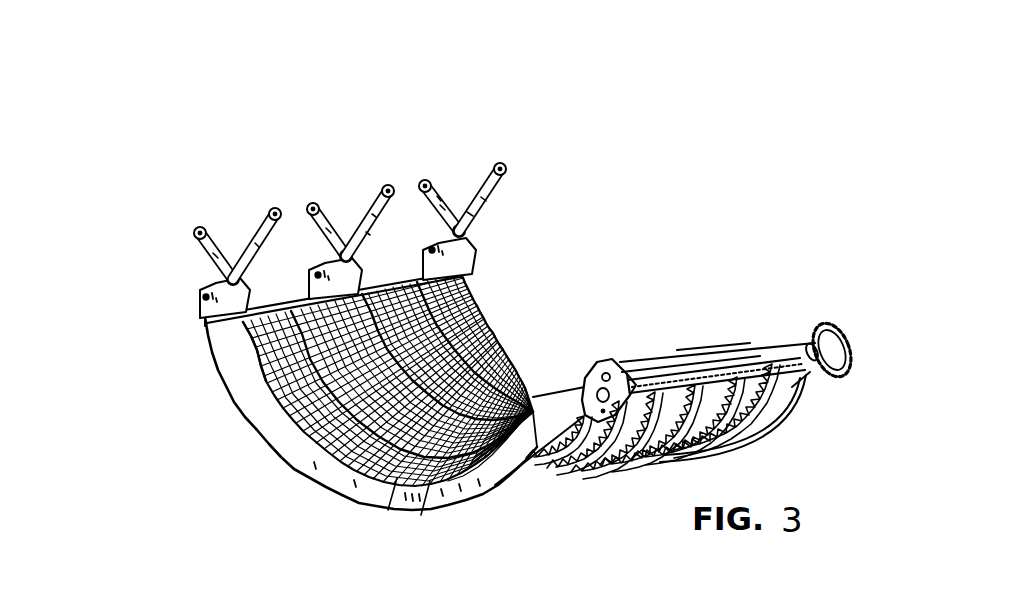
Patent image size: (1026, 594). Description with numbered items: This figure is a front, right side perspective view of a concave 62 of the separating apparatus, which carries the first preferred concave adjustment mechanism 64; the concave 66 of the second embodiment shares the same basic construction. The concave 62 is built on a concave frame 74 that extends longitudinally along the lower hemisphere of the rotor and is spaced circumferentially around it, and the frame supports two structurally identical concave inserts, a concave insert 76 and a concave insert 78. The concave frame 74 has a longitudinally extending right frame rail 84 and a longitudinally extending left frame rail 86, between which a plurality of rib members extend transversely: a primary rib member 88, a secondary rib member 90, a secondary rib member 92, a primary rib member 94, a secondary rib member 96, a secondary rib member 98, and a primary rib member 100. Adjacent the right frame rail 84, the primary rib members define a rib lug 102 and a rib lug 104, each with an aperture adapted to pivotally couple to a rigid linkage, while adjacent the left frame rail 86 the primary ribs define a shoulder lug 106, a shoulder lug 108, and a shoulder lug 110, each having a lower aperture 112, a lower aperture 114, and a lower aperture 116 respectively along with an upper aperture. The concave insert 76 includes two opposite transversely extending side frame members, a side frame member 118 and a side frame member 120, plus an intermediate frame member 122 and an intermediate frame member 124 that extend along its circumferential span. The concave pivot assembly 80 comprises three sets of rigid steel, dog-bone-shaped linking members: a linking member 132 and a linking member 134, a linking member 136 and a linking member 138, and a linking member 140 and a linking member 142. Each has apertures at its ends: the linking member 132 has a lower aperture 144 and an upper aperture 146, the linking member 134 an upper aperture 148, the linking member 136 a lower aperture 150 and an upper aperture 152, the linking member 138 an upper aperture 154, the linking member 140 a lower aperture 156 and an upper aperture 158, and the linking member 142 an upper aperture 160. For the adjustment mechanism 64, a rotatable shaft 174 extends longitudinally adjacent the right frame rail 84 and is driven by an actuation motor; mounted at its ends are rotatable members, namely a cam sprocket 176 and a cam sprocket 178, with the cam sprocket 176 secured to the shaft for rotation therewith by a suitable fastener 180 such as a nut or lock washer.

The concave 62 is at (521, 86).
The concave adjustment mechanism 64 is at (752, 238).
The concave 66 is at (535, 593).
The concave frame 74 is at (312, 489).
The concave insert 76 is at (290, 413).
The concave insert 78 is at (488, 313).
The concave pivot assembly 80 is at (265, 80).
The right frame rail 84 is at (649, 360).
The left frame rail 86 is at (458, 270).
The primary rib member 88 is at (478, 489).
The secondary rib member 90 is at (527, 488).
The secondary rib member 92 is at (560, 464).
The primary rib member 94 is at (600, 461).
The secondary rib member 96 is at (621, 463).
The secondary rib member 98 is at (693, 458).
The primary rib member 100 is at (727, 452).
The rib lug 102 is at (557, 405).
The rib lug 104 is at (786, 346).
The shoulder lug 106 is at (205, 315).
The shoulder lug 108 is at (427, 180).
The shoulder lug 110 is at (461, 262).
The lower aperture 112 is at (203, 297).
The lower aperture 114 is at (313, 283).
The lower aperture 116 is at (424, 257).
The side frame member 118 is at (262, 385).
The side frame member 120 is at (397, 480).
The intermediate frame member 122 is at (268, 360).
The intermediate frame member 124 is at (430, 484).
The linking member 132 is at (213, 257).
The linking member 134 is at (250, 238).
The linking member 136 is at (318, 223).
The linking member 138 is at (360, 228).
The linking member 140 is at (443, 222).
The linking member 142 is at (473, 190).
The lower aperture 144 is at (226, 280).
The upper aperture 146 is at (225, 277).
The upper aperture 148 is at (275, 208).
The lower aperture 150 is at (380, 232).
The upper aperture 152 is at (313, 204).
The upper aperture 154 is at (390, 185).
The lower aperture 156 is at (467, 218).
The upper aperture 158 is at (441, 166).
The upper aperture 160 is at (503, 165).
The rotatable shaft 174 is at (704, 372).
The cam sprocket 176 is at (629, 365).
The cam sprocket 178 is at (842, 323).
The fastener 180 is at (598, 362).